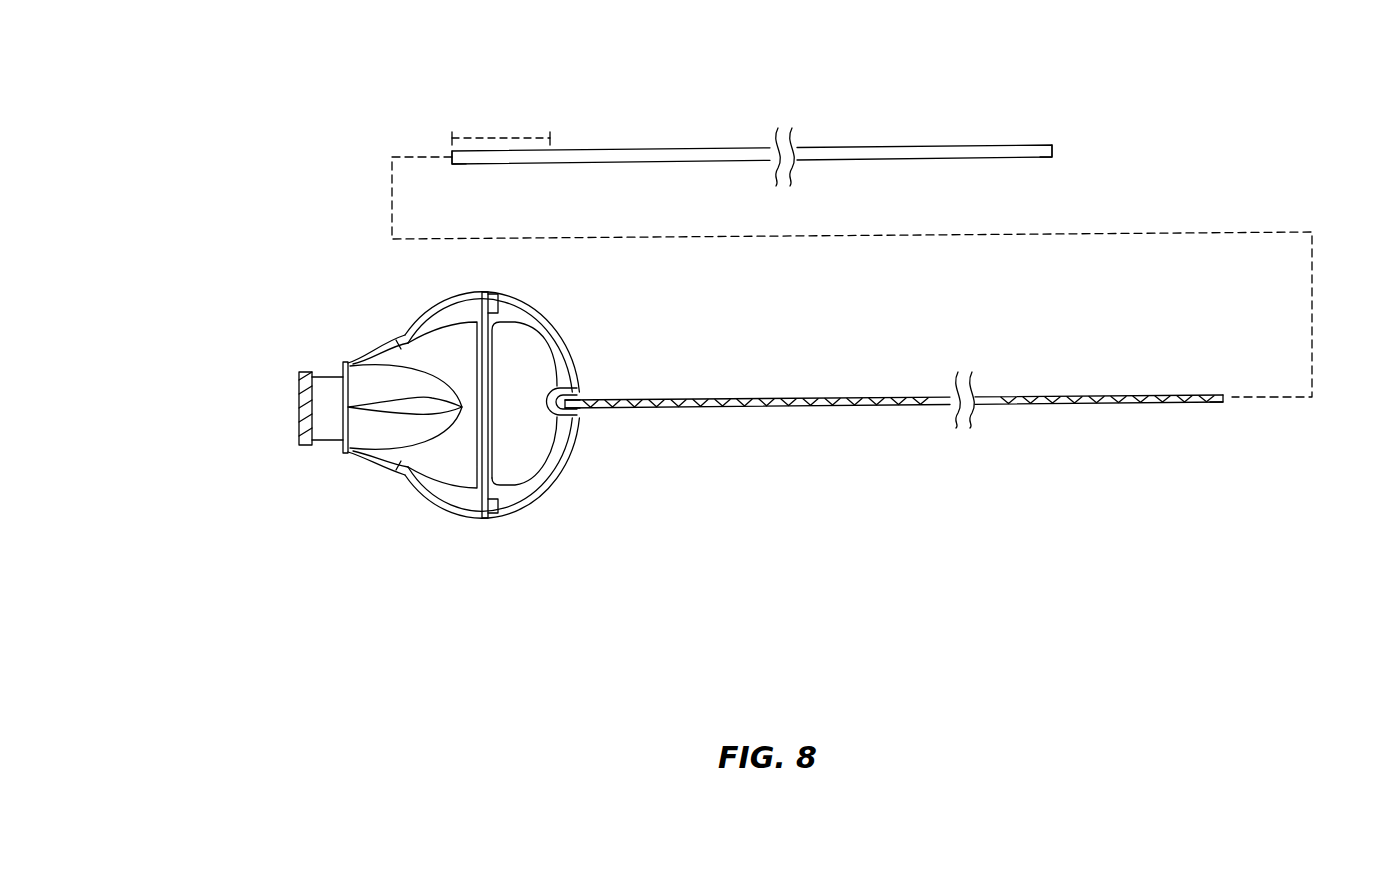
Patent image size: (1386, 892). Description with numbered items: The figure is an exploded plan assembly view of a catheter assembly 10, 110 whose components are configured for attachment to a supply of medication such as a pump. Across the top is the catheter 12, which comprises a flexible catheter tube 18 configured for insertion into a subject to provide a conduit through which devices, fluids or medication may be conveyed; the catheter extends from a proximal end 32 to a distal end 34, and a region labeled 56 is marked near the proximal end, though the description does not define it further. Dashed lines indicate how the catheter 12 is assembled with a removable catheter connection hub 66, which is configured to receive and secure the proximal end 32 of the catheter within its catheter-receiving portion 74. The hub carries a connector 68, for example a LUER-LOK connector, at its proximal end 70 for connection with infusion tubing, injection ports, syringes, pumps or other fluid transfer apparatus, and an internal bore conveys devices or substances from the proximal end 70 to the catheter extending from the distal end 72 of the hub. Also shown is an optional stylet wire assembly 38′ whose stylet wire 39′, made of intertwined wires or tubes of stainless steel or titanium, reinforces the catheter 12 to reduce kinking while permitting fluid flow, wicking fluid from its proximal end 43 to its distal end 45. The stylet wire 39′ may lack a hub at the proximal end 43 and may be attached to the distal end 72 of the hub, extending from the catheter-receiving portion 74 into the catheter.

The catheter assembly 10 is at (188, 103).
The catheter assembly 110 is at (762, 293).
The catheter 12 is at (891, 128).
The flexible catheter tube 18 is at (637, 150).
The proximal end of the catheter 32 is at (448, 150).
The distal end of the catheter 34 is at (1062, 146).
The proximal portion length 56 is at (505, 132).
The removable catheter connection hub 66 is at (379, 338).
The connector 68 is at (304, 370).
The proximal end of the removable catheter connection hub 70 is at (288, 394).
The catheter-receiving portion 74 is at (575, 397).
The distal end of the removable catheter connection hub 72 is at (594, 413).
The proximal end of the stylet wire 43 is at (560, 423).
The stylet wire assembly 38′ is at (854, 391).
The stylet wire 39′ is at (1053, 393).
The distal end of the stylet wire 45 is at (1234, 393).